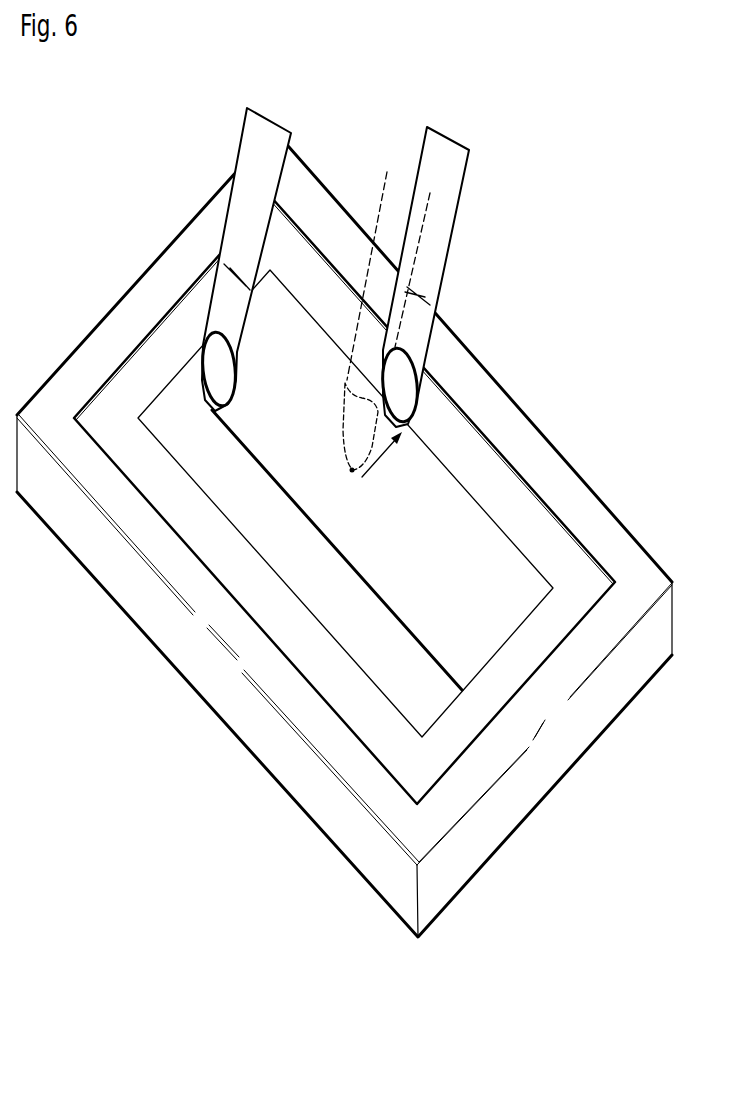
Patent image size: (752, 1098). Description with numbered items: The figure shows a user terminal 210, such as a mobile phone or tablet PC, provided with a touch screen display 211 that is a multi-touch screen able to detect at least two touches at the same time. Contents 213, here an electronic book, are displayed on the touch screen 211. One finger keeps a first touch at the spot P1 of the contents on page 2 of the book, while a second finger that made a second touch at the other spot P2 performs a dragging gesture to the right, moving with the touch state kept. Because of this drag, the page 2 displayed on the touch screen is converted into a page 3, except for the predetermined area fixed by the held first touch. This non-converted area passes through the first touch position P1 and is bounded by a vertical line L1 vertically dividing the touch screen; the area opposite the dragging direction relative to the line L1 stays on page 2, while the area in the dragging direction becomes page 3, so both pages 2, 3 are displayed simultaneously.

The user terminal 210 is at (330, 212).
The touch screen display 211 is at (448, 420).
The contents 213 is at (507, 572).
The page 2 is at (445, 680).
The page 3 is at (510, 603).
The vertical line L1 is at (378, 600).
The spot of first touch P1 is at (210, 405).
The spot of second touch P2 is at (352, 470).